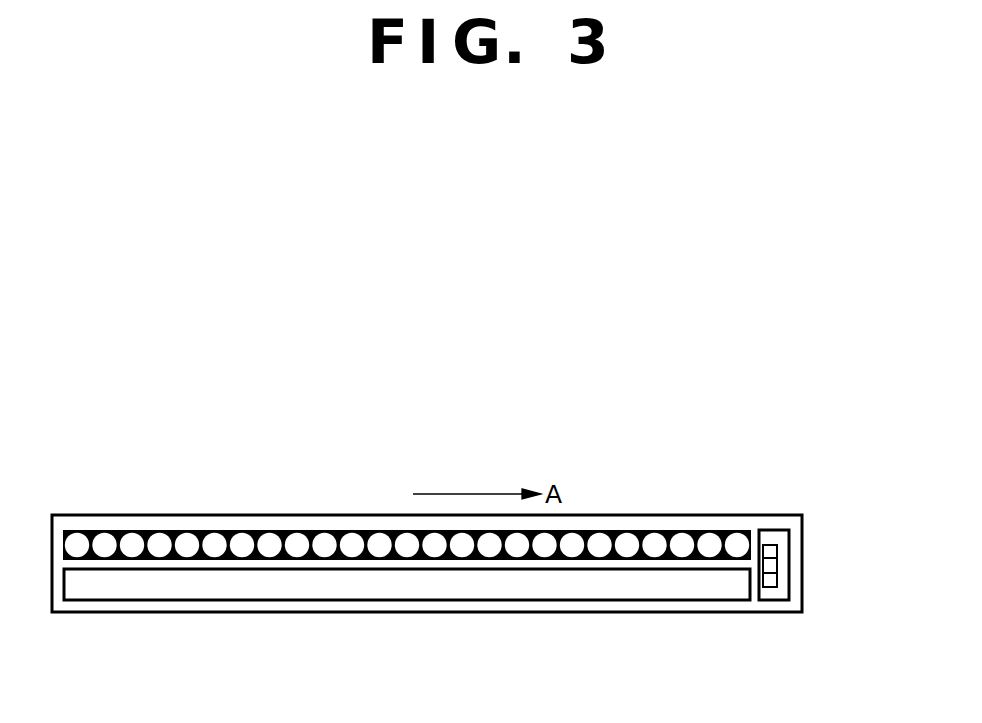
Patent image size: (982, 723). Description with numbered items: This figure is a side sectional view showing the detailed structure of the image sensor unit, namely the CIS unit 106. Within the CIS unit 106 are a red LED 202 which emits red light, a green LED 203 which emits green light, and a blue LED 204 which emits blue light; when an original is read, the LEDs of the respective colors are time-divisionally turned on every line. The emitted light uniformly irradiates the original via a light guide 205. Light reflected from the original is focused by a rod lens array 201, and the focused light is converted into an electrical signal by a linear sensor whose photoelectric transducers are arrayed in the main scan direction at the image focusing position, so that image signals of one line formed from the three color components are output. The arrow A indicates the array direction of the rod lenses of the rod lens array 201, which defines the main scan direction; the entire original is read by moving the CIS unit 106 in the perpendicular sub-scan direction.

The CIS unit 106 is at (444, 376).
The rod lens array 201 is at (328, 540).
The red LED 202 is at (768, 548).
The green LED 203 is at (777, 566).
The blue LED 204 is at (770, 582).
The light guide 205 is at (355, 585).